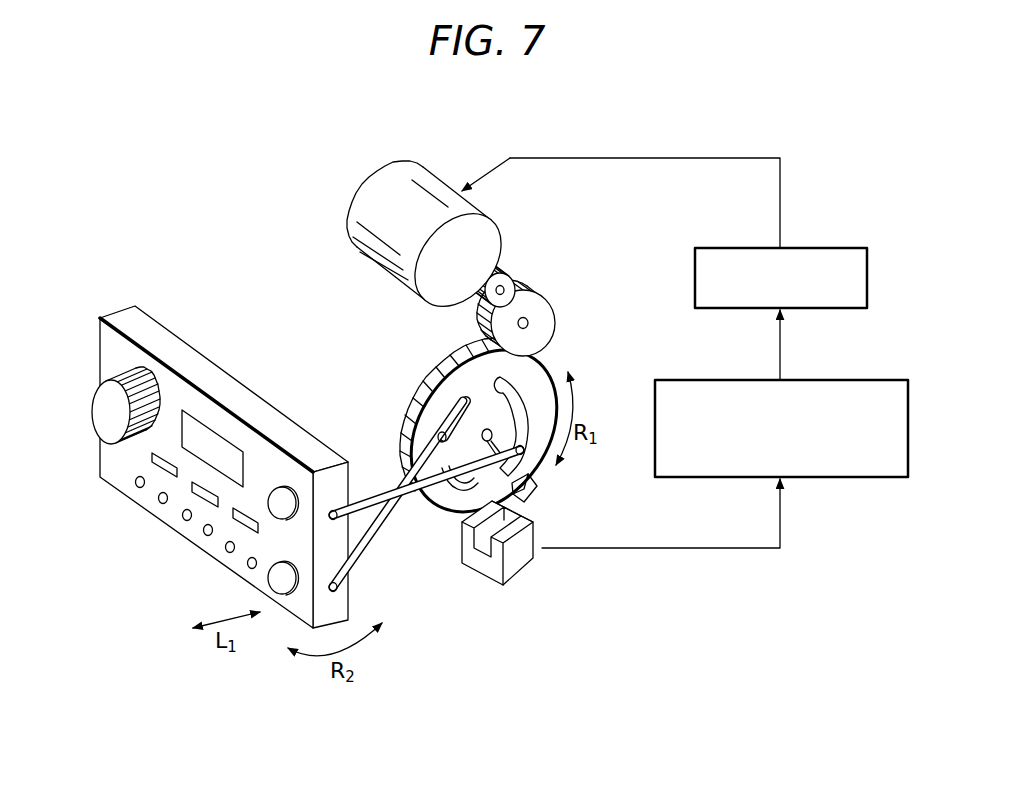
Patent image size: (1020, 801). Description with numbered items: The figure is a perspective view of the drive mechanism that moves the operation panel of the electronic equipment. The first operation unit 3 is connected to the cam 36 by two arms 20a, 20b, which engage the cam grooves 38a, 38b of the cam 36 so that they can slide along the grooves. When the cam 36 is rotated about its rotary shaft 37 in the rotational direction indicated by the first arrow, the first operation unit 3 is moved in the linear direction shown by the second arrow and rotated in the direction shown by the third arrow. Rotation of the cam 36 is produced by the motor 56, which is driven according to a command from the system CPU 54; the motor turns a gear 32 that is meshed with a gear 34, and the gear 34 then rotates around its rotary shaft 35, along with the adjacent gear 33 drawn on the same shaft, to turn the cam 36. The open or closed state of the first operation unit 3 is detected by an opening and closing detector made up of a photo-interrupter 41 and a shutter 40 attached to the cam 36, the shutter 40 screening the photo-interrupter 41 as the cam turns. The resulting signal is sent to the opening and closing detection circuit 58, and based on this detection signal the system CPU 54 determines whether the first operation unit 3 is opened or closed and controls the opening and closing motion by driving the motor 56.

The first operation unit 3 is at (125, 487).
The arm 20a is at (370, 543).
The arm 20b is at (390, 493).
The gear 32 is at (505, 280).
The intermediate gear 33 is at (562, 323).
The gear 34 is at (545, 313).
The rotary shaft 35 is at (527, 327).
The cam 36 is at (537, 380).
The rotary shaft 37 is at (535, 478).
The cam groove 38a is at (452, 405).
The cam groove 38b is at (490, 373).
The shutter 40 is at (530, 490).
The photo-interrupter 41 is at (517, 563).
The system CPU 54 is at (832, 248).
The motor 56 is at (432, 172).
The opening and closing detection circuit 58 is at (870, 380).